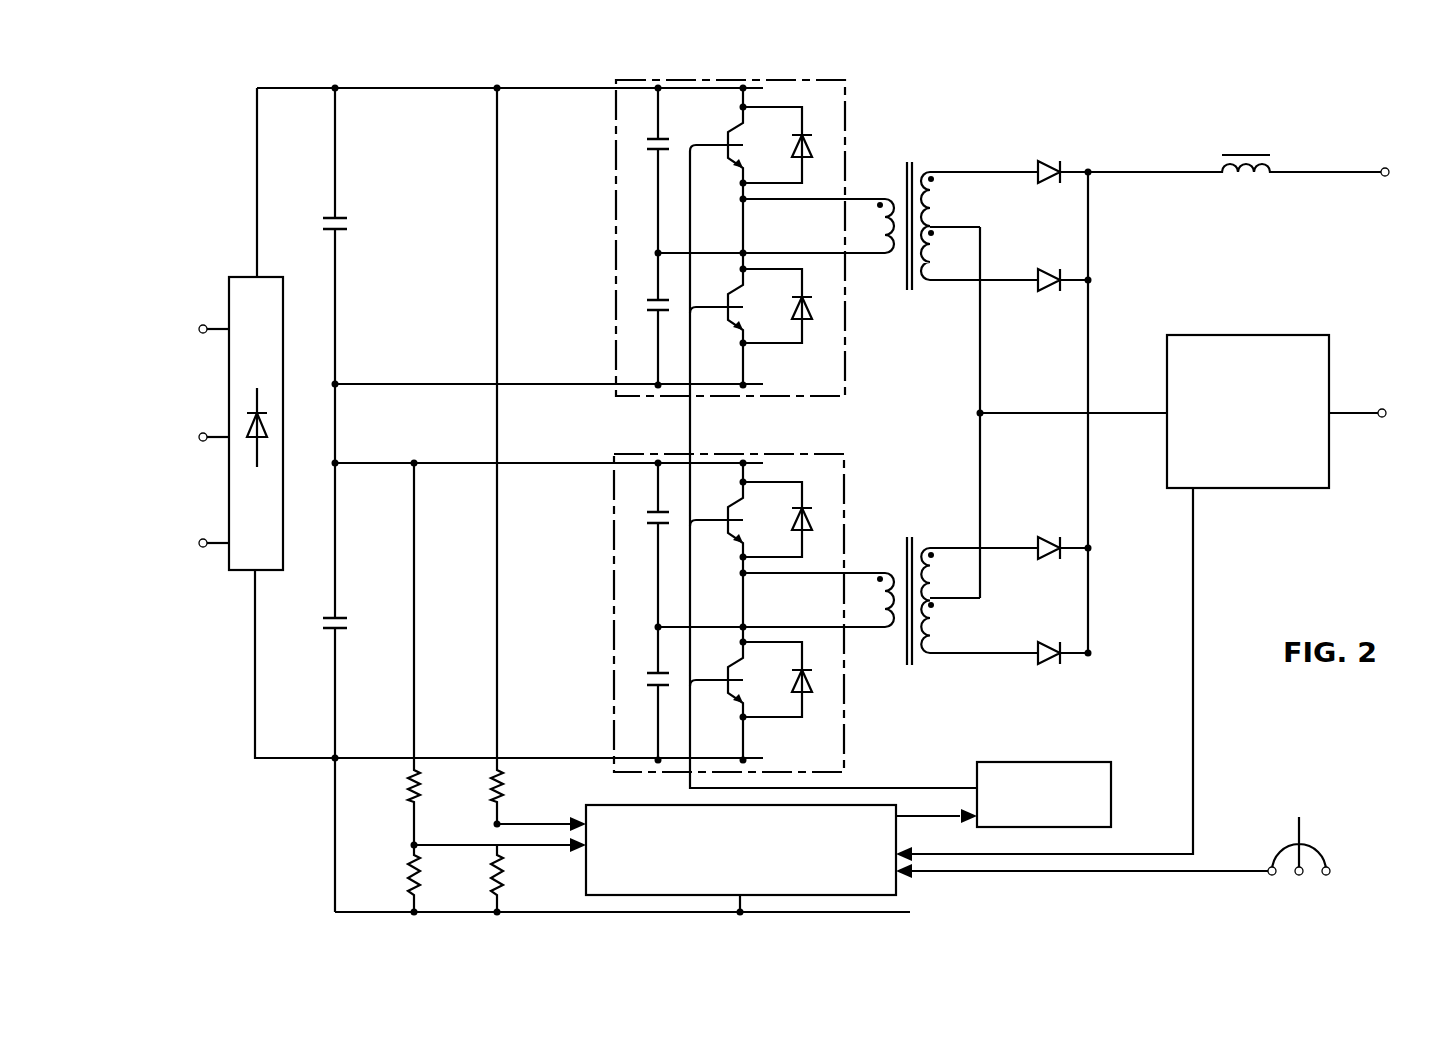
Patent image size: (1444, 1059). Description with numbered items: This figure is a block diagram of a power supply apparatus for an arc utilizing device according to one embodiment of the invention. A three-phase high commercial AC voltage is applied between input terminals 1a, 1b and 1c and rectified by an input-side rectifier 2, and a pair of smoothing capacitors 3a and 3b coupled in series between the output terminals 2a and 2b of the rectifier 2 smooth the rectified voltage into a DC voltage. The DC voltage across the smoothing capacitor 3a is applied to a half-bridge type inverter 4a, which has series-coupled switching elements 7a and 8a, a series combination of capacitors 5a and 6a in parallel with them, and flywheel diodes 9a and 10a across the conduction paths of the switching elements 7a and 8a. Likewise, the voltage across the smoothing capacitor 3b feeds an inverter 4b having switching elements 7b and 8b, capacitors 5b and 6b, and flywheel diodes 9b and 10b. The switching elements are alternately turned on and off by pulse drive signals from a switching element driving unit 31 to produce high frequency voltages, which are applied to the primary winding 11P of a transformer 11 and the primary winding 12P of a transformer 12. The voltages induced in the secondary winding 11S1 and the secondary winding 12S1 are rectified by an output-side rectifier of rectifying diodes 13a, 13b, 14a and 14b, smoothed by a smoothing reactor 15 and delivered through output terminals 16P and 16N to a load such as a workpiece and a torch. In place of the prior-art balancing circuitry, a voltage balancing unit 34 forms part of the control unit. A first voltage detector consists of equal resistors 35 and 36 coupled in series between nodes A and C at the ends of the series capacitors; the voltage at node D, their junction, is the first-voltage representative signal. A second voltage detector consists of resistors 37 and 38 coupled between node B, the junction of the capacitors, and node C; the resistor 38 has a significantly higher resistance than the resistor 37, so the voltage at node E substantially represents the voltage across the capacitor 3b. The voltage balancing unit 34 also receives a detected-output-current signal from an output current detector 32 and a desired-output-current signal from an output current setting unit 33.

The input terminal 1a is at (203, 334).
The input terminal 1b is at (203, 442).
The input terminal 1c is at (203, 548).
The input-side rectifier 2 is at (245, 292).
The output terminal of rectifier 2a is at (337, 91).
The output terminal of rectifier 2b is at (334, 756).
The smoothing capacitor 3a is at (320, 232).
The smoothing capacitor 3b is at (322, 624).
The inverter 4a is at (763, 395).
The inverter 4b is at (844, 752).
The capacitor 5a is at (648, 144).
The capacitor 5b is at (646, 518).
The capacitor 6a is at (644, 308).
The capacitor 6b is at (642, 682).
The switching element 7a is at (729, 156).
The switching element 7b is at (726, 531).
The switching element 8a is at (729, 318).
The switching element 8b is at (726, 691).
The flywheel diode 9a is at (830, 128).
The flywheel diode 9b is at (810, 520).
The flywheel diode 10a is at (805, 320).
The flywheel diode 10b is at (805, 693).
The transformer 11 is at (922, 147).
The primary winding 11P is at (886, 244).
The secondary winding 11S1 is at (932, 216).
The transformer 12 is at (920, 527).
The primary winding 12P is at (884, 620).
The secondary winding 12S1 is at (924, 632).
The rectifying diode 13a is at (1053, 162).
The rectifying diode 13b is at (1050, 292).
The rectifying diode 14a is at (1053, 537).
The rectifying diode 14b is at (1050, 665).
The smoothing reactor 15 is at (1246, 154).
The output terminal 16P is at (1396, 163).
The output terminal 16N is at (1393, 404).
The switching element driving unit 31 is at (1111, 798).
The output current detector 32 is at (1258, 330).
The output current setting unit 33 is at (1328, 850).
The voltage balancing unit 34 is at (586, 858).
The resistor 35 is at (515, 804).
The resistor 36 is at (486, 869).
The resistor 37 is at (419, 782).
The resistor 38 is at (404, 868).
The node A is at (499, 91).
The node B is at (416, 461).
The node C is at (333, 762).
The node D is at (496, 824).
The node E is at (412, 846).